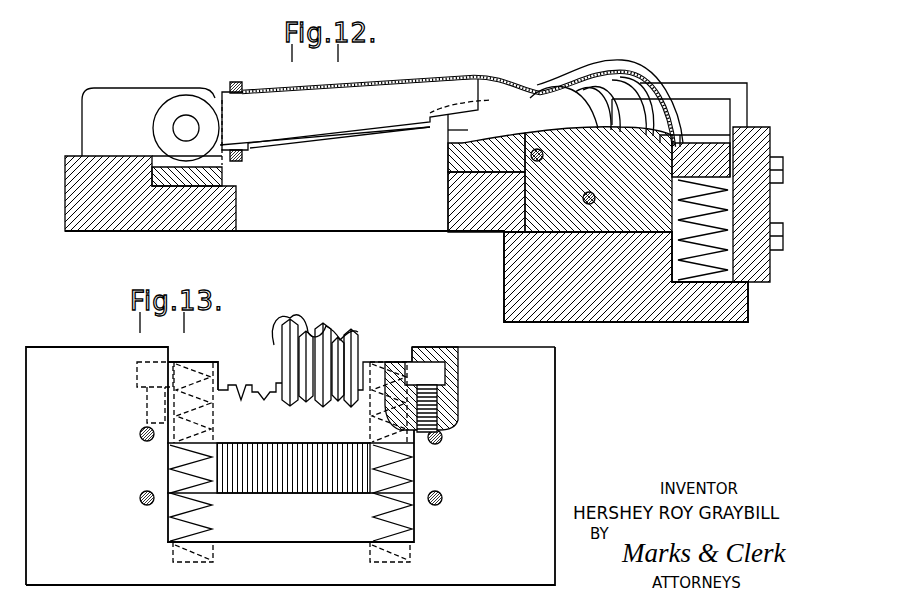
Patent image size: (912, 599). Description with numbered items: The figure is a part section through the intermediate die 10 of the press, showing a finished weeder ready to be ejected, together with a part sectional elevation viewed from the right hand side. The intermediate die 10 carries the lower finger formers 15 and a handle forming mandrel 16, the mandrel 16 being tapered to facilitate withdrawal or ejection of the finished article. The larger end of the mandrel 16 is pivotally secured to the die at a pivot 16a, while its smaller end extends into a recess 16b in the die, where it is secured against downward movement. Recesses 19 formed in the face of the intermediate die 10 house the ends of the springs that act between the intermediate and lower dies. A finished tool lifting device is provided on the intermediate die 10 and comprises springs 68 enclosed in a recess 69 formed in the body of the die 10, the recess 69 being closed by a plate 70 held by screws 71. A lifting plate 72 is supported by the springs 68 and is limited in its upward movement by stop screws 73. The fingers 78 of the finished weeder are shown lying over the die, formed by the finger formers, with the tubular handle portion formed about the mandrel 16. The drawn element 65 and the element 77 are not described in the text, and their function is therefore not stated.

In FIG. 12, the intermediate die 10 is at (652, 322).
In FIG. 13, the intermediate die 10 is at (538, 471).
In FIG. 13, the lower finger formers 15 is at (318, 346).
In FIG. 12, the handle forming mandrel 16 is at (253, 104).
In FIG. 12, the pivot 16a is at (184, 116).
In FIG. 12, the recess 16b is at (468, 143).
In FIG. 12, the recesses 19 is at (352, 86).
In FIG. 12, the pin 65 is at (232, 83).
In FIG. 12, the springs 68 is at (712, 277).
In FIG. 13, the springs 68 is at (182, 517).
In FIG. 12, the recess 69 is at (685, 273).
In FIG. 12, the plate 70 is at (760, 146).
In FIG. 12, the screws 71 is at (783, 172).
In FIG. 12, the lifting plate 72 is at (700, 150).
In FIG. 13, the stop screws 73 is at (150, 377).
In FIG. 12, the strap 77 is at (441, 76).
In FIG. 12, the fingers 78 is at (637, 70).